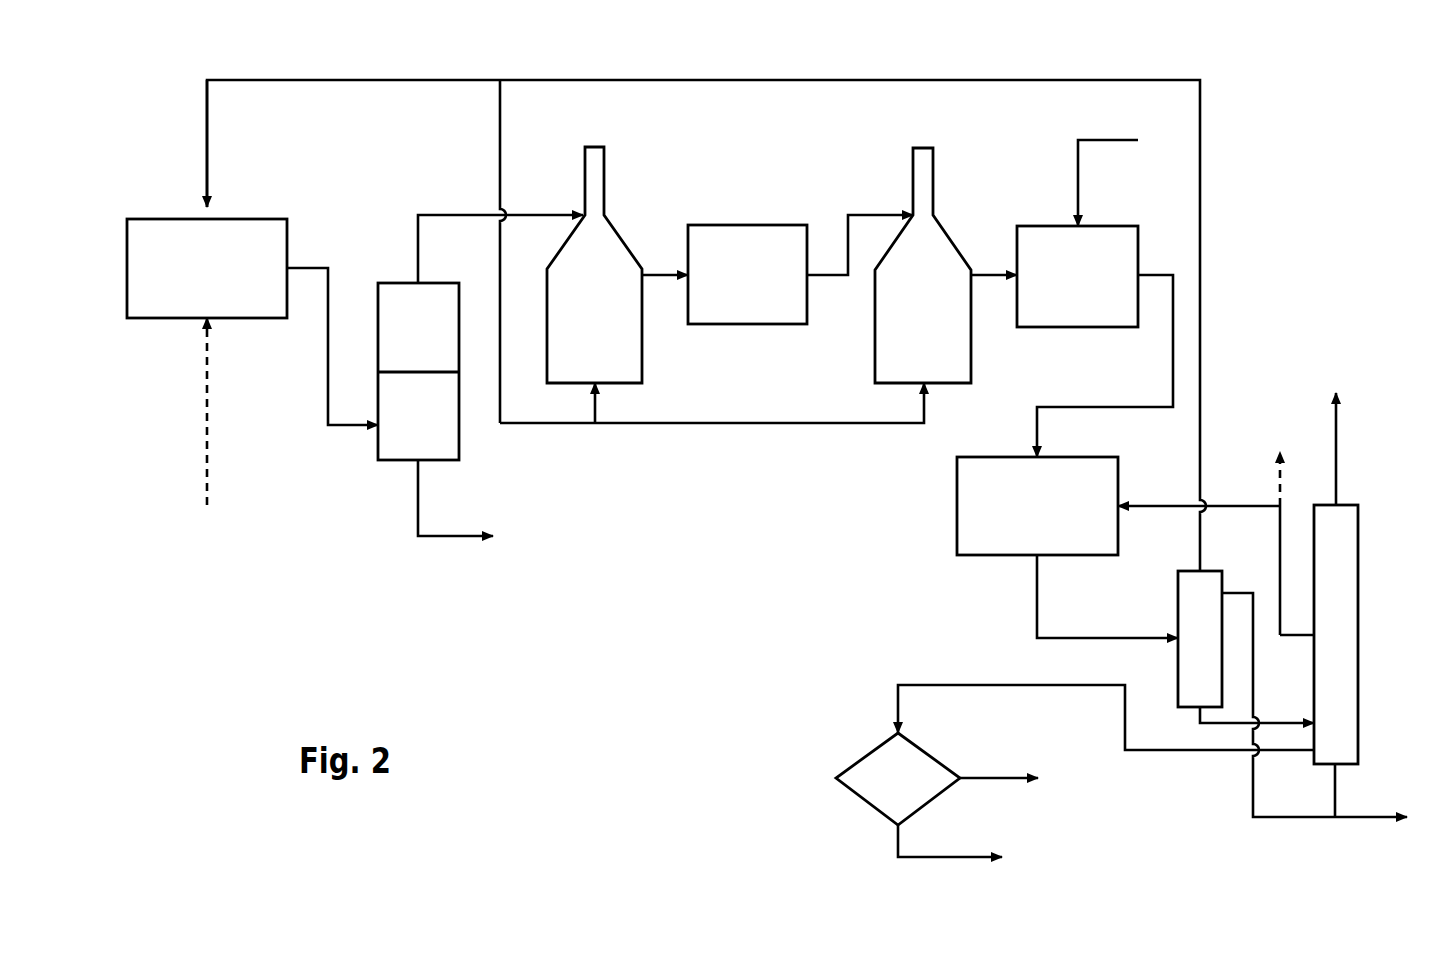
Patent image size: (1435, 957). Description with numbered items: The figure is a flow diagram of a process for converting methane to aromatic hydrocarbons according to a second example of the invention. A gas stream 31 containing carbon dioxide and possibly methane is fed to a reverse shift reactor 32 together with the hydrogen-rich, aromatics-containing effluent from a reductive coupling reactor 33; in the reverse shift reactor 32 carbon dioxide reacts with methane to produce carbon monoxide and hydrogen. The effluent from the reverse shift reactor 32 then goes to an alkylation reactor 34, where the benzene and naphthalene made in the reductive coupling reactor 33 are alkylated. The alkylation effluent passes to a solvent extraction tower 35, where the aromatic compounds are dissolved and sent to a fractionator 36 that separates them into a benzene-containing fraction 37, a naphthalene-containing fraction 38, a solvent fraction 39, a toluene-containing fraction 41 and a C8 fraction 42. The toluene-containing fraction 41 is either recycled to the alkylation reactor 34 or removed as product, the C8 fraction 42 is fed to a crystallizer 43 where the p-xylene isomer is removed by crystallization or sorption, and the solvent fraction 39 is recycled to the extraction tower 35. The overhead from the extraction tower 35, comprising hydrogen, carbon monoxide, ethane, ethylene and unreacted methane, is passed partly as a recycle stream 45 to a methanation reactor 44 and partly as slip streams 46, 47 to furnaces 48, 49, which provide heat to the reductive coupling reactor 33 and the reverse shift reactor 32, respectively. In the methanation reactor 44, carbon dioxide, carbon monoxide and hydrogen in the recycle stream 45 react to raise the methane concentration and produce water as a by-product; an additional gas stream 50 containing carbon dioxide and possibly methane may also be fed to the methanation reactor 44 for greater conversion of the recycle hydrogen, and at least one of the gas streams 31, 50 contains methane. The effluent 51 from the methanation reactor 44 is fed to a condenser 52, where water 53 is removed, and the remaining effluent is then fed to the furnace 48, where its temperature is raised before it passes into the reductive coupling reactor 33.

The gas stream 31 is at (1105, 140).
The reverse shift reactor 32 is at (1048, 226).
The reductive coupling reactor 33 is at (730, 225).
The alkylation reactor 34 is at (957, 503).
The solvent extraction tower 35 is at (1178, 610).
The fractionator 36 is at (1362, 660).
The benzene-containing fraction 37 is at (1333, 430).
The naphthalene-containing fraction 38 is at (1362, 820).
The solvent fraction 39 is at (1250, 790).
The toluene-containing fraction 41 is at (1278, 548).
The C8 fraction 42 is at (1123, 727).
The crystallizer 43 is at (937, 795).
The methanation reactor 44 is at (240, 219).
The recycle stream 45 is at (207, 123).
The slip stream 46 is at (500, 152).
The slip stream 47 is at (708, 423).
The furnace 48 is at (604, 172).
The furnace 49 is at (933, 170).
The additional gas stream 50 is at (208, 478).
The effluent 51 is at (310, 268).
The condenser 52 is at (459, 447).
The water 53 is at (418, 510).